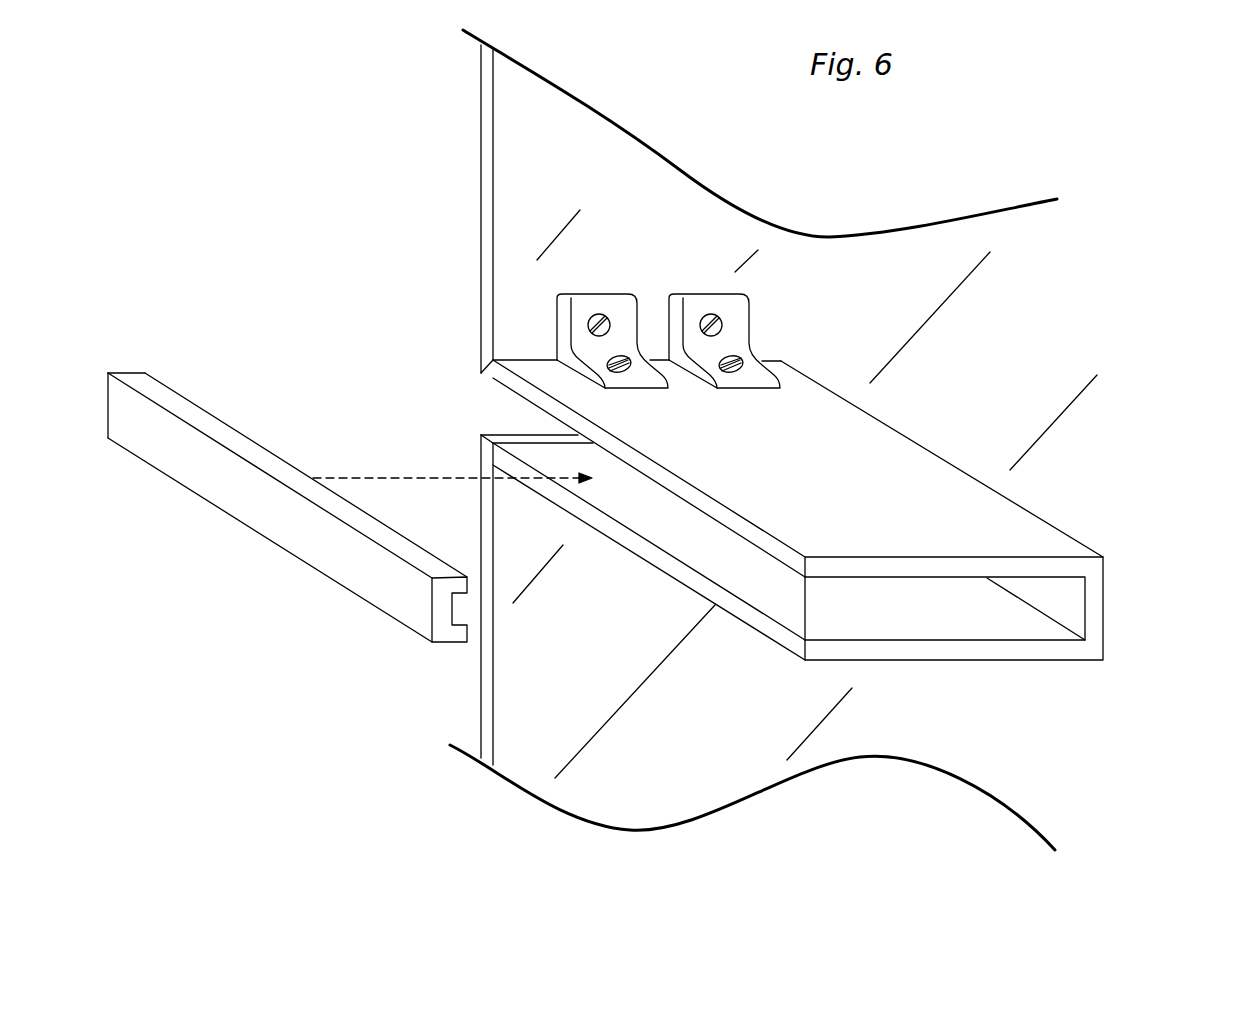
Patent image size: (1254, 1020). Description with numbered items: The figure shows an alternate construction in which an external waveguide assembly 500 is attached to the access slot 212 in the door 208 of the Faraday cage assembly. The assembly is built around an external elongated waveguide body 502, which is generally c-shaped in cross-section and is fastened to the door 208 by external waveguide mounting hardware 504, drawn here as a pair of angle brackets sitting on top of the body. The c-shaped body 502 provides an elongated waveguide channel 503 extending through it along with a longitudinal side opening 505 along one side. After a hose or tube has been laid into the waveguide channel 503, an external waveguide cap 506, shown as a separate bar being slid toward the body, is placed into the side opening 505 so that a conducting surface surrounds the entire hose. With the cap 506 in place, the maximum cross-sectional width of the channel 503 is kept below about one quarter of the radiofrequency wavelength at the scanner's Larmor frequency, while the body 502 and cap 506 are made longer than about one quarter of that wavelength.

The door 208 is at (1050, 316).
The access slot 212 is at (483, 417).
The external waveguide assembly 500 is at (866, 578).
The external elongated waveguide body 502 is at (866, 528).
The waveguide channel 503 is at (935, 615).
The external waveguide mounting hardware 504 is at (582, 316).
The longitudinal side opening 505 is at (675, 507).
The external waveguide cap 506 is at (337, 557).